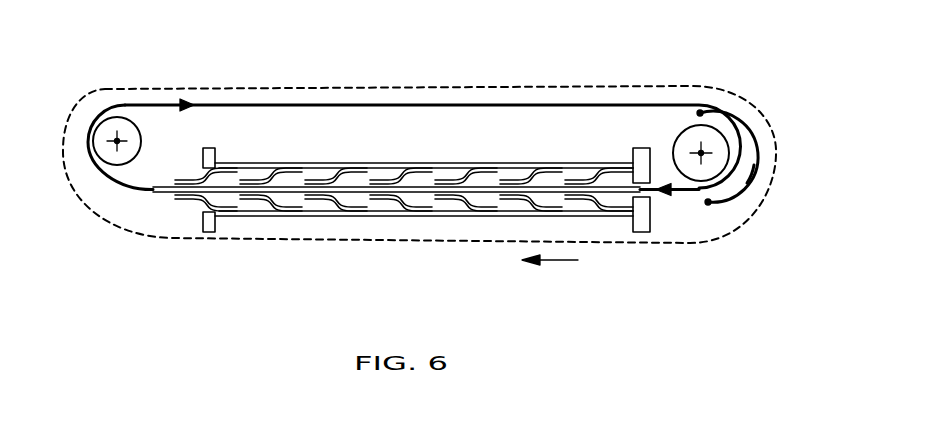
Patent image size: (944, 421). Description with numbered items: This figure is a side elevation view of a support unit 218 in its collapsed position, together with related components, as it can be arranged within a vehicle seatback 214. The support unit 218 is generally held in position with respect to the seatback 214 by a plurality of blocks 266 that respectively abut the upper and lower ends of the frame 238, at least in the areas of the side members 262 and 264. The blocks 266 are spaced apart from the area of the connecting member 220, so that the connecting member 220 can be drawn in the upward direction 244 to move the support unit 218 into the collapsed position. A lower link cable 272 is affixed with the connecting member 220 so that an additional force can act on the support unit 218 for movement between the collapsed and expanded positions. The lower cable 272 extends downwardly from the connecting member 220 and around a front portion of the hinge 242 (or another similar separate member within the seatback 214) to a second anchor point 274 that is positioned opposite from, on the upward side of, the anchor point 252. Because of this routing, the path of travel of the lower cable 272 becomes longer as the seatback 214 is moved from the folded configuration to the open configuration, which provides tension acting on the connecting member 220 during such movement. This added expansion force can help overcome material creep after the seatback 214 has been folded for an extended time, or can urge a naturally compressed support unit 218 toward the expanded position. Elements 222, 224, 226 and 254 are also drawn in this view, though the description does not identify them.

The seatback 214 is at (524, 88).
The support unit 218 is at (340, 156).
The connecting member 220 is at (442, 196).
The louvers 222 is at (480, 170).
The louvers 224 is at (268, 174).
The drive roller 226 is at (672, 104).
The frame 238 is at (176, 198).
The hinge 242 is at (713, 140).
The upward direction 244 is at (557, 261).
The anchor point 252 is at (710, 205).
The idler roller 254 is at (125, 127).
The side member 262 is at (402, 166).
The side member 264 is at (388, 217).
The blocks 266 is at (210, 148).
The lower link cable 272 is at (747, 183).
The second anchor point 274 is at (703, 111).